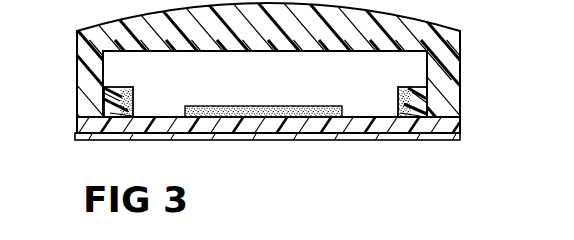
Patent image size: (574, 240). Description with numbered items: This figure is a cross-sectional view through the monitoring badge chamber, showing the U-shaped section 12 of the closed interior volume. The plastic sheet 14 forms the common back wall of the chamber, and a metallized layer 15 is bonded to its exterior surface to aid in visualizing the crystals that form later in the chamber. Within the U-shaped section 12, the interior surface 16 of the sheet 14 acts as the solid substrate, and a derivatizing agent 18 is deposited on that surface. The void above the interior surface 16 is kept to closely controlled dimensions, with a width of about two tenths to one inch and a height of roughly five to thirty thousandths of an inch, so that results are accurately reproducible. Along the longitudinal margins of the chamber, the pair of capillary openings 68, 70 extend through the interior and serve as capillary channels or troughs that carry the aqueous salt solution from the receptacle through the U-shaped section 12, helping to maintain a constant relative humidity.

The U-shaped section 12 is at (462, 30).
The plastic sheet 14 is at (167, 127).
The metallized layer 15 is at (100, 135).
The interior surface 16 is at (390, 120).
The derivatizing agent 18 is at (312, 118).
The capillary opening 68 is at (120, 104).
The capillary opening 70 is at (413, 103).